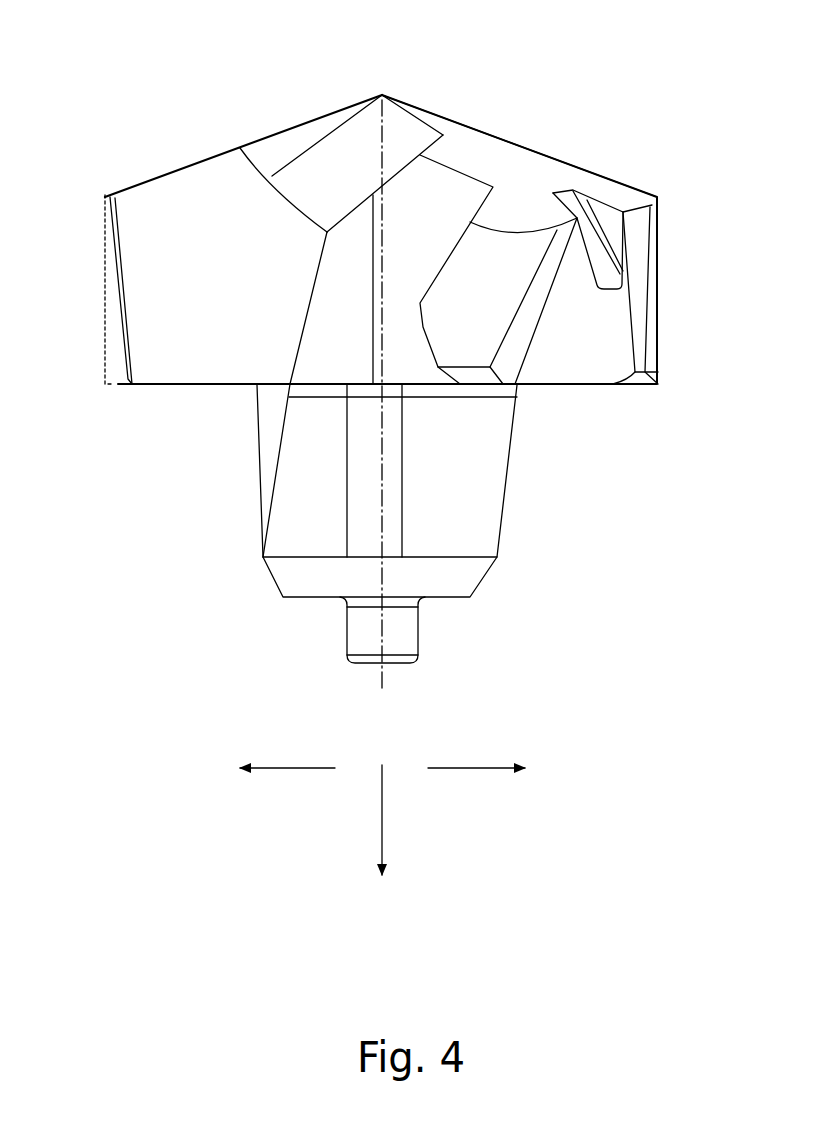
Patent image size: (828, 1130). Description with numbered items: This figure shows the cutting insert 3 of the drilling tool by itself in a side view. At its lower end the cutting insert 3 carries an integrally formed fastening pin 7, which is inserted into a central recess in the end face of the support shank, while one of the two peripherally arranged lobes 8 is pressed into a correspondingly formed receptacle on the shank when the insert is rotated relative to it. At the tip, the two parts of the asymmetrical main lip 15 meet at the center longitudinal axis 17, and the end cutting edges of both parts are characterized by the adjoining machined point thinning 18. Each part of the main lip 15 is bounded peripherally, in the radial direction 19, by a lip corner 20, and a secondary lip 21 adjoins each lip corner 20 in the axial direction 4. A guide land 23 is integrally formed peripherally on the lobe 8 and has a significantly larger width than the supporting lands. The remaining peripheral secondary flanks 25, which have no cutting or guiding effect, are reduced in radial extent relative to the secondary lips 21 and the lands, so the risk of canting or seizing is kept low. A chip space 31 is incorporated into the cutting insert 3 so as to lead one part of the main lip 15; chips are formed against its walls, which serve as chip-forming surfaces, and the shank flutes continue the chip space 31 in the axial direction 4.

The cutting insert 3 is at (480, 95).
The axial direction 4 is at (383, 855).
The fastening pin 7 is at (508, 530).
The lobe 8 is at (515, 220).
The main lip 15 is at (182, 170).
The center longitudinal axis 17 is at (380, 78).
The point thinning 18 is at (323, 182).
The radial direction 19 is at (282, 770).
The lip corner 20 is at (122, 200).
The secondary lip 21 is at (125, 305).
The guide land 23 is at (465, 314).
The secondary flank 25 is at (583, 354).
The chip space 31 is at (258, 289).